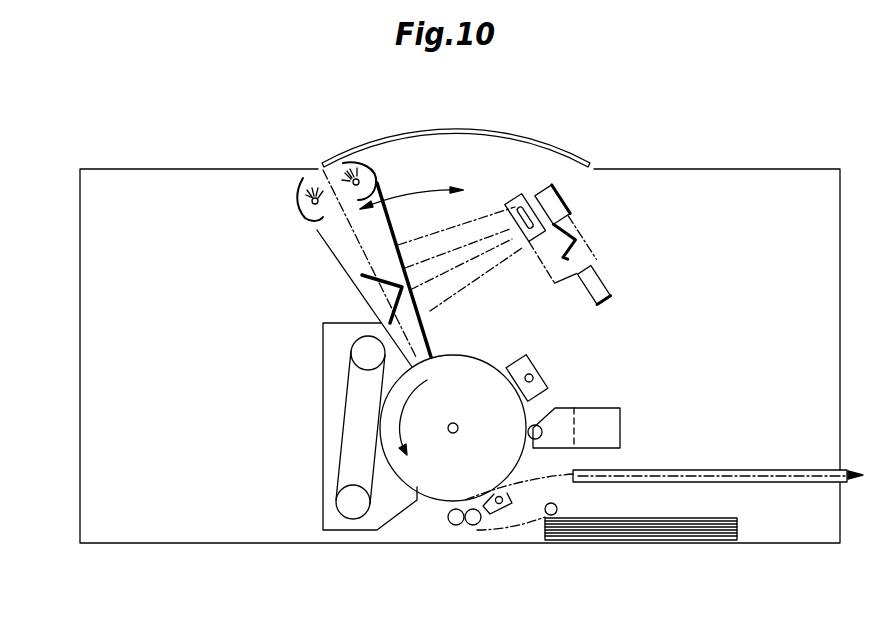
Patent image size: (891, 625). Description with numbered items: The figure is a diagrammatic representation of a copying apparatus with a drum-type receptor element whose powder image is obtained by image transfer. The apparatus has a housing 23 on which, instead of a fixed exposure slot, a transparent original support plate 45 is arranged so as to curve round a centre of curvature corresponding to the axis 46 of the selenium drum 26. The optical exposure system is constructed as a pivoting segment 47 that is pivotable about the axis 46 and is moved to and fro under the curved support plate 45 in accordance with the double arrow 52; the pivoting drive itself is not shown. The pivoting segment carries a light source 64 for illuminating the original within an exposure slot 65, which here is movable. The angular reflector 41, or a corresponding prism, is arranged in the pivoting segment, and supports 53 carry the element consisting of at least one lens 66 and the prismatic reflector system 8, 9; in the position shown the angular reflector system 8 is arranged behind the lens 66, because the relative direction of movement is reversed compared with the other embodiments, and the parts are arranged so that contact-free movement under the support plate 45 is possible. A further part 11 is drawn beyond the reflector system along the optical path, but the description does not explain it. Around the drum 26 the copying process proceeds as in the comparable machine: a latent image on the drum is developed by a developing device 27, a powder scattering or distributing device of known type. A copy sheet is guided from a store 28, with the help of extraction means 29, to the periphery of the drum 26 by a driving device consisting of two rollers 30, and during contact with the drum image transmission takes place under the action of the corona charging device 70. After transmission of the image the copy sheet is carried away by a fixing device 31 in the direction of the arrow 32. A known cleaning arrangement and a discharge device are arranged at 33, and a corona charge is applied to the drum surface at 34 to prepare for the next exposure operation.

The prismatic reflector system 8 is at (545, 195).
The prismatic reflector system 9 is at (577, 247).
The amplifier unit 11 is at (600, 288).
The housing 23 is at (80, 472).
The selenium drum 26 is at (388, 423).
The developing device 27 is at (332, 352).
The store 28 is at (650, 532).
The extraction means 29 is at (553, 515).
The rollers 30 is at (458, 525).
The fixing device 31 is at (767, 470).
The arrow 32 is at (860, 481).
The cleaning arrangement and discharge device 33 is at (613, 425).
The corona charge location 34 is at (533, 363).
The angular reflector 41 is at (391, 302).
The transparent original support plate 45 is at (571, 153).
The axis 46 is at (453, 433).
The pivoting segment 47 is at (343, 267).
The double arrow 52 is at (415, 190).
The supports 53 is at (463, 288).
The light source 64 is at (352, 185).
The exposure slot 65 is at (331, 172).
The lens 66 is at (515, 205).
The corona charging device 70 is at (500, 508).